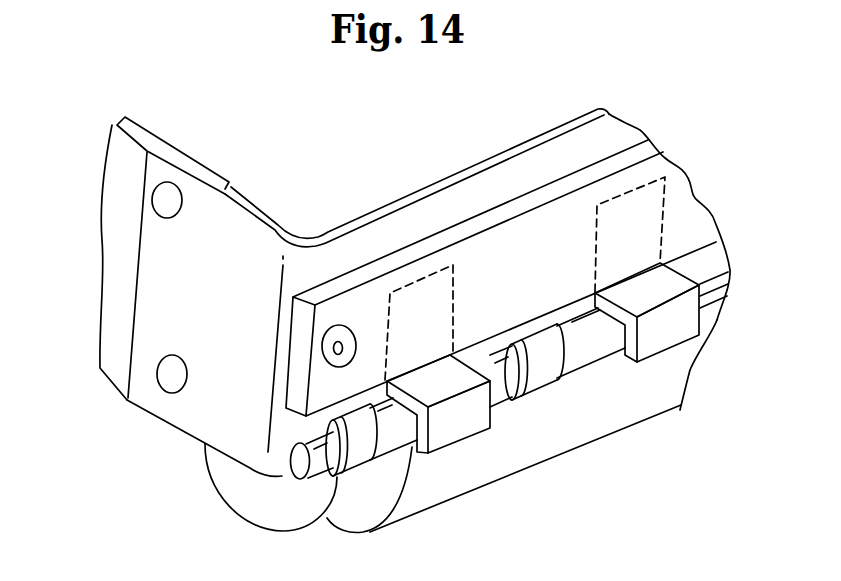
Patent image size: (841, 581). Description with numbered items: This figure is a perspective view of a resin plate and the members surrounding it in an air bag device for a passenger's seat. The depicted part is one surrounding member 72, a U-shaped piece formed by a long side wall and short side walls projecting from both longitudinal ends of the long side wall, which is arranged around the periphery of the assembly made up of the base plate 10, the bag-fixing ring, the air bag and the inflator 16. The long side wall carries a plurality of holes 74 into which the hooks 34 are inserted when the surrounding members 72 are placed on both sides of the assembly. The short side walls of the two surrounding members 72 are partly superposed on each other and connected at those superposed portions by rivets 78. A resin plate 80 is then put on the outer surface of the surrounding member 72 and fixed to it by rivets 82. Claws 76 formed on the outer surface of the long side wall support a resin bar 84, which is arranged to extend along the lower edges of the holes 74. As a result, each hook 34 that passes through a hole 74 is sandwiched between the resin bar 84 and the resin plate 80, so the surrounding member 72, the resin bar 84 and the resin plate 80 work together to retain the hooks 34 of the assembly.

The base plate 10 is at (533, 440).
The inflator 16 is at (243, 500).
The hook 34 is at (450, 430).
The surrounding member 72 is at (112, 257).
The hole 74 is at (446, 312).
The claw 76 is at (542, 373).
The rivet 78 is at (170, 197).
The resin plate 80 is at (518, 237).
The rivet 82 is at (334, 348).
The resin bar 84 is at (712, 293).